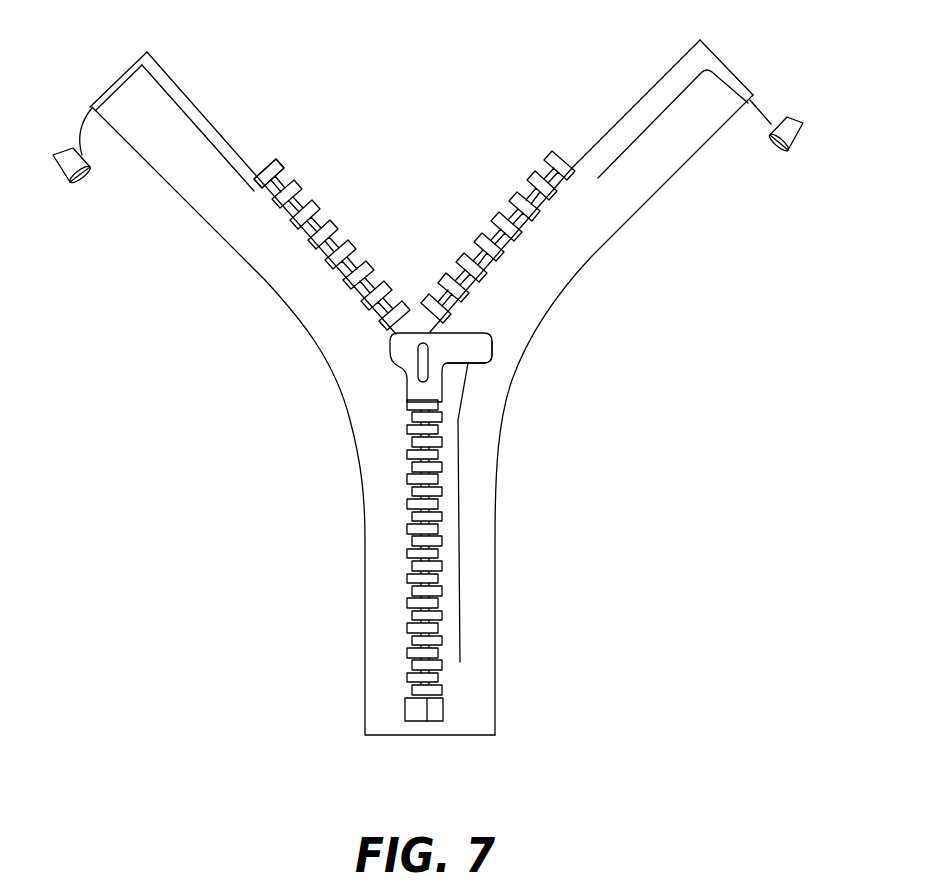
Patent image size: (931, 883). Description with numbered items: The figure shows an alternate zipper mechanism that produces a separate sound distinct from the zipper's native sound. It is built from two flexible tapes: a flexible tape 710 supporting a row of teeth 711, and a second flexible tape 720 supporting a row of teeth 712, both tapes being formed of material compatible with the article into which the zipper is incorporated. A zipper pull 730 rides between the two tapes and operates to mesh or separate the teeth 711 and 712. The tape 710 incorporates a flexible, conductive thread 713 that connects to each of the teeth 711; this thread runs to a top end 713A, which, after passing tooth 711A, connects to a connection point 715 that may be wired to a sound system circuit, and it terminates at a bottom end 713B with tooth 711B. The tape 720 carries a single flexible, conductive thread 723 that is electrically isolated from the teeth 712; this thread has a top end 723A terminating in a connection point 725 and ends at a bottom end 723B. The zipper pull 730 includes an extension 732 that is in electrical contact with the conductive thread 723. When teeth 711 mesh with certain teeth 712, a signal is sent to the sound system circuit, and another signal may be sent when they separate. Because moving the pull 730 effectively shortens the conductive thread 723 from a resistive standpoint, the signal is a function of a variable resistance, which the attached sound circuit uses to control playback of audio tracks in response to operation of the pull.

The flexible tape 710 is at (280, 262).
The teeth 711 is at (276, 168).
The tooth 711A is at (272, 164).
The tooth 711B is at (417, 693).
The teeth 712 is at (566, 152).
The conductive thread 713 is at (117, 81).
The top end 713A is at (93, 136).
The bottom end 713B is at (405, 682).
The connection point 715 is at (58, 174).
The flexible tape 720 is at (567, 283).
The conductive thread 723 is at (760, 107).
The top end 723A is at (750, 120).
The bottom end 723B is at (462, 648).
The connection point 725 is at (793, 150).
The zipper pull 730 is at (422, 331).
The extension 732 is at (482, 357).